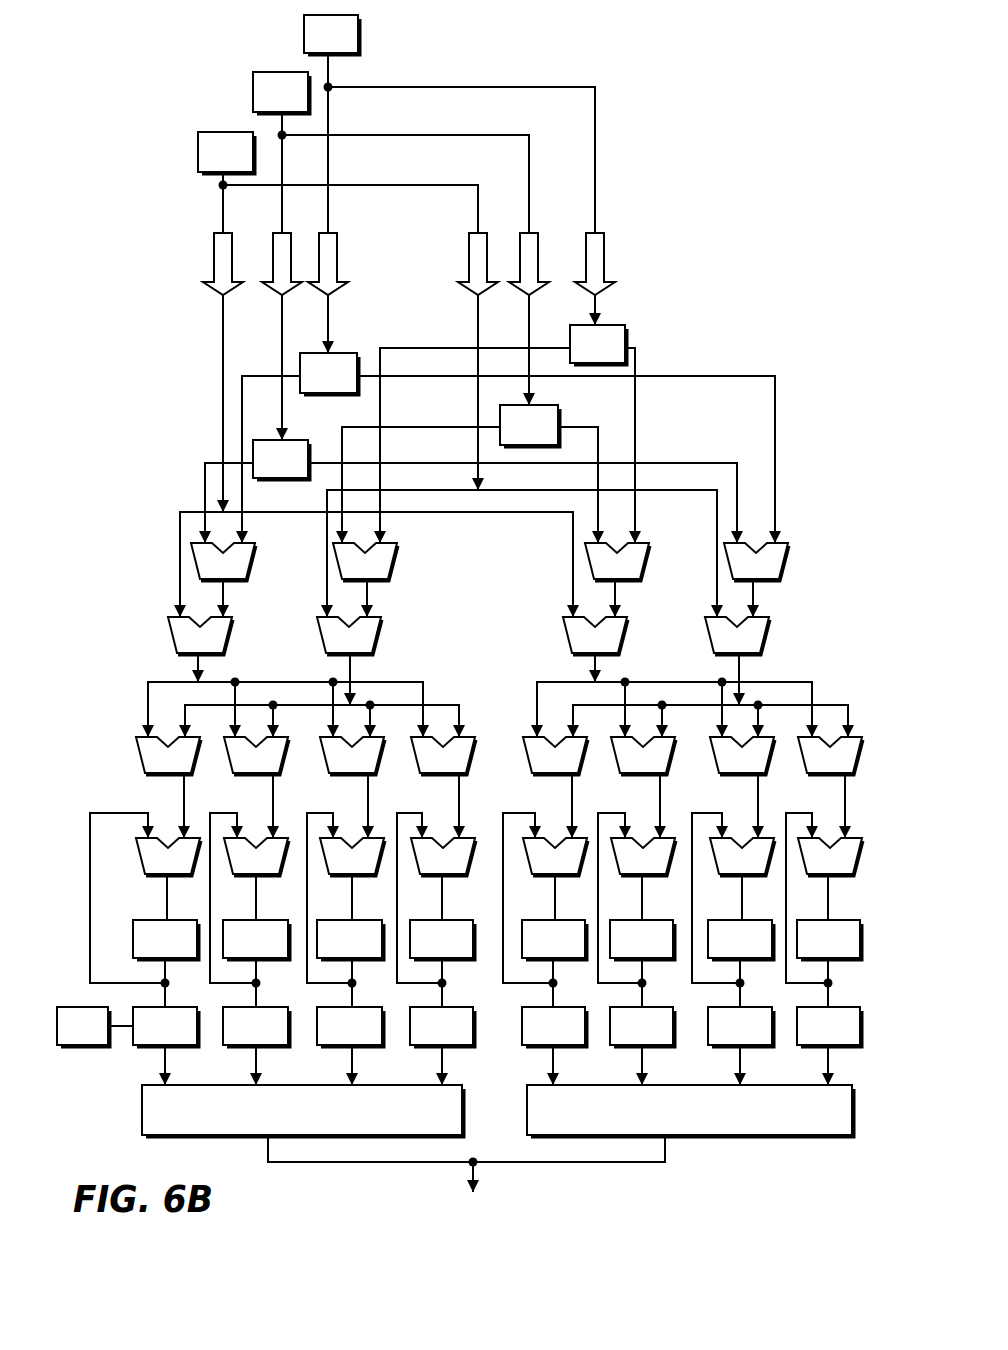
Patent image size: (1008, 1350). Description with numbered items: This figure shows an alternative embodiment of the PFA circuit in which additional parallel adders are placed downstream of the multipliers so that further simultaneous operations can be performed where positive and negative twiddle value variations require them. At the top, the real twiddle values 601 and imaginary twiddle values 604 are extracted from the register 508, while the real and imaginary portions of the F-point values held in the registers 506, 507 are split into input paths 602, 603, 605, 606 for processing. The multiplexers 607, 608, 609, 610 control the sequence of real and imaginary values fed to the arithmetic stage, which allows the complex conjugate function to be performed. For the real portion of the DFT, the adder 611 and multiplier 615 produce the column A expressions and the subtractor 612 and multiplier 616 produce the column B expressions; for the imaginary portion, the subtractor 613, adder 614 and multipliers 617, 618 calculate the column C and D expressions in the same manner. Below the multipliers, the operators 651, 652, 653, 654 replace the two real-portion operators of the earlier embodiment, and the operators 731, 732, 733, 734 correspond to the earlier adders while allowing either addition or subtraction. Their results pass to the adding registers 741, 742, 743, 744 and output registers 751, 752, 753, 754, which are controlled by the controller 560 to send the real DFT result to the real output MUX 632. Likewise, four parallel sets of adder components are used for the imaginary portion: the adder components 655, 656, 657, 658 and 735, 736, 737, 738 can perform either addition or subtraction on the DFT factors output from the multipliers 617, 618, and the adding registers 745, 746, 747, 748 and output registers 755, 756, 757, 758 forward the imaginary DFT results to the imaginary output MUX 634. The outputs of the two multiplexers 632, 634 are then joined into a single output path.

The register 507 is at (350, 49).
The register 506 is at (299, 106).
The register 508 is at (244, 166).
The real twiddle values 601 is at (214, 266).
The input path 602 is at (272, 250).
The input path 603 is at (337, 258).
The imaginary twiddle values 604 is at (470, 268).
The input path 605 is at (519, 254).
The input path 606 is at (605, 266).
The multiplexer 607 is at (299, 474).
The multiplexer 608 is at (347, 387).
The multiplexer 609 is at (548, 439).
The multiplexer 610 is at (616, 359).
The adder 611 is at (256, 556).
The subtractor 612 is at (398, 563).
The subtractor 613 is at (652, 558).
The adder 614 is at (788, 565).
The multiplier 615 is at (170, 632).
The multiplier 616 is at (383, 632).
The multiplier 617 is at (565, 632).
The multiplier 618 is at (770, 632).
The operator 651 is at (140, 758).
The operator 652 is at (230, 758).
The operator 653 is at (325, 758).
The operator 654 is at (418, 758).
The adder component 655 is at (528, 758).
The adder component 656 is at (615, 758).
The adder component 657 is at (715, 758).
The adder component 658 is at (803, 758).
The operator 731 is at (147, 862).
The operator 732 is at (268, 870).
The operator 733 is at (362, 870).
The operator 734 is at (455, 870).
The adder component 735 is at (535, 862).
The adder component 736 is at (655, 870).
The adder component 737 is at (722, 862).
The adder component 738 is at (812, 862).
The adding register 741 is at (184, 953).
The adding register 742 is at (275, 953).
The adding register 743 is at (369, 953).
The adding register 744 is at (461, 953).
The adding register 745 is at (572, 953).
The adding register 746 is at (661, 953).
The adding register 747 is at (759, 953).
The adding register 748 is at (847, 953).
The output register 751 is at (184, 1040).
The output register 752 is at (275, 1040).
The output register 753 is at (369, 1040).
The output register 754 is at (461, 1040).
The output register 755 is at (572, 1040).
The output register 756 is at (661, 1040).
The output register 757 is at (759, 1040).
The output register 758 is at (847, 1040).
The controller 560 is at (101, 1040).
The real output MUX 632 is at (289, 1124).
The imaginary output MUX 634 is at (686, 1124).